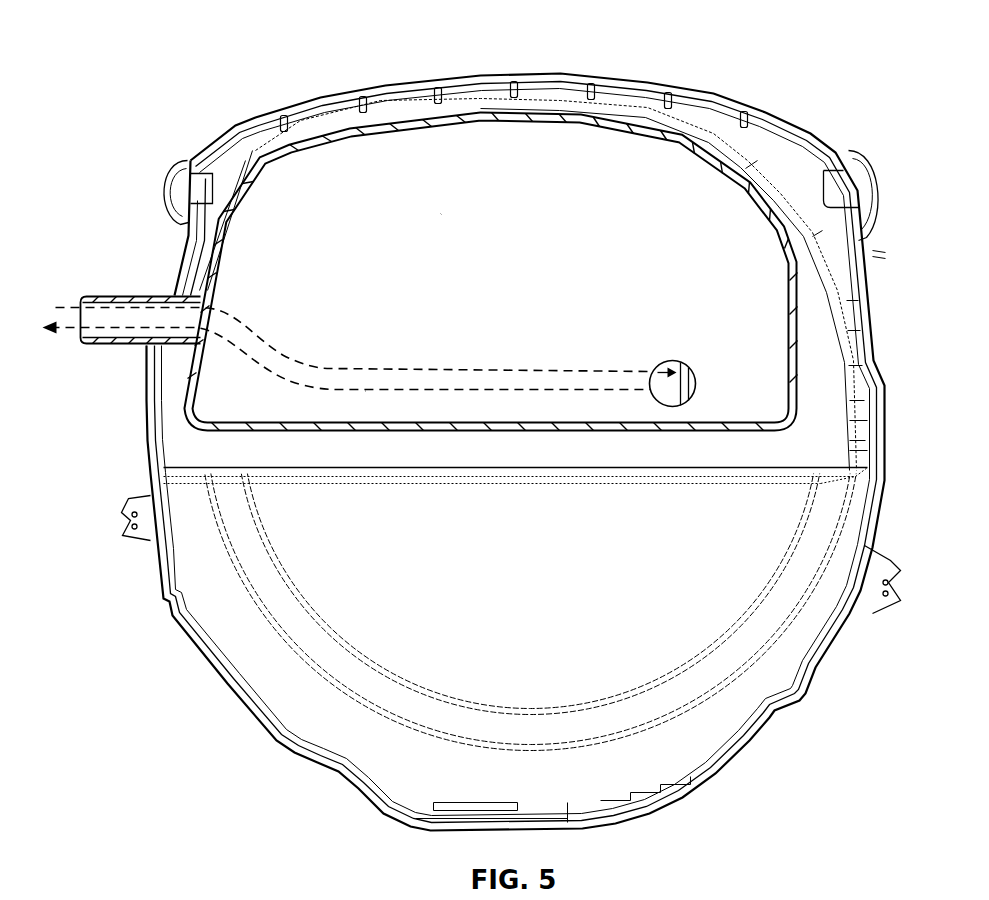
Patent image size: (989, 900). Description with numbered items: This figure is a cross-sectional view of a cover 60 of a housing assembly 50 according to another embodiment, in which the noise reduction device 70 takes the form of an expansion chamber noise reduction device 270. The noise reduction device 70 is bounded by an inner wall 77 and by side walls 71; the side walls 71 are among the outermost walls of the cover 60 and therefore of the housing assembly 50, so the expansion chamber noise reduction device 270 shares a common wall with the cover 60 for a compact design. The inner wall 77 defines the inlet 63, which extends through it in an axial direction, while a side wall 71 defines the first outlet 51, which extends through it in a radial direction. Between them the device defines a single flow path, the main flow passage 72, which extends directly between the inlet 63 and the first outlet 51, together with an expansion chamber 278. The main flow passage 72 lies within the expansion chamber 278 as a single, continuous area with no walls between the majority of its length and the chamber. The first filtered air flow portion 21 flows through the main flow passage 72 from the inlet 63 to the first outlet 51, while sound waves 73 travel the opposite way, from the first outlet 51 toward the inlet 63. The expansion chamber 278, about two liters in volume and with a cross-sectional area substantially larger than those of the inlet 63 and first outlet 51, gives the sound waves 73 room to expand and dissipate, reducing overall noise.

The housing assembly 50 is at (536, 452).
The cover 60 is at (879, 293).
The noise reduction device 70 is at (528, 248).
The expansion chamber noise reduction device 270 is at (464, 110).
The side wall 71 is at (567, 110).
The inner wall 77 is at (700, 177).
The expansion chamber 278 is at (440, 213).
The sound waves 73 is at (98, 310).
The first filtered air flow portion 21 is at (110, 327).
The first outlet 51 is at (140, 350).
The main flow passage 72 is at (365, 390).
The inlet 63 is at (694, 383).